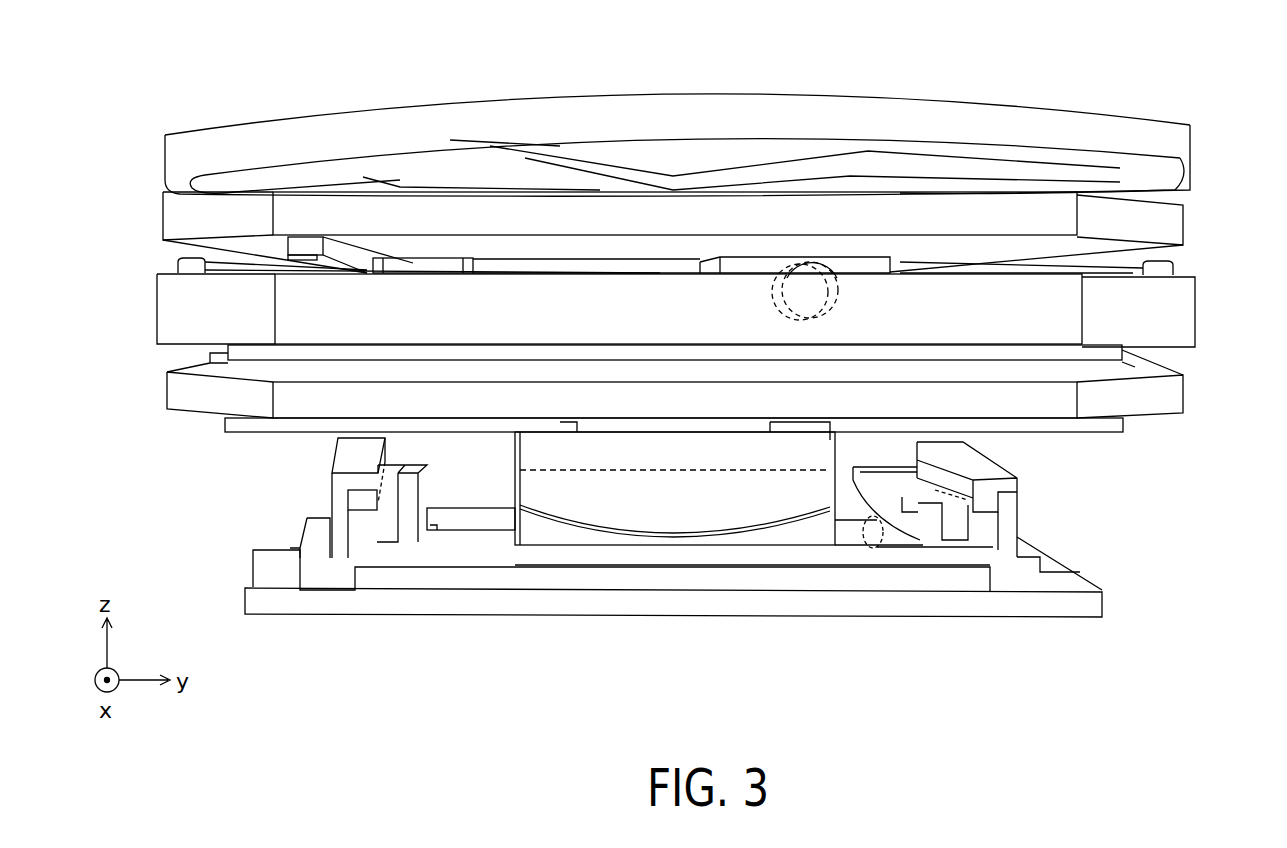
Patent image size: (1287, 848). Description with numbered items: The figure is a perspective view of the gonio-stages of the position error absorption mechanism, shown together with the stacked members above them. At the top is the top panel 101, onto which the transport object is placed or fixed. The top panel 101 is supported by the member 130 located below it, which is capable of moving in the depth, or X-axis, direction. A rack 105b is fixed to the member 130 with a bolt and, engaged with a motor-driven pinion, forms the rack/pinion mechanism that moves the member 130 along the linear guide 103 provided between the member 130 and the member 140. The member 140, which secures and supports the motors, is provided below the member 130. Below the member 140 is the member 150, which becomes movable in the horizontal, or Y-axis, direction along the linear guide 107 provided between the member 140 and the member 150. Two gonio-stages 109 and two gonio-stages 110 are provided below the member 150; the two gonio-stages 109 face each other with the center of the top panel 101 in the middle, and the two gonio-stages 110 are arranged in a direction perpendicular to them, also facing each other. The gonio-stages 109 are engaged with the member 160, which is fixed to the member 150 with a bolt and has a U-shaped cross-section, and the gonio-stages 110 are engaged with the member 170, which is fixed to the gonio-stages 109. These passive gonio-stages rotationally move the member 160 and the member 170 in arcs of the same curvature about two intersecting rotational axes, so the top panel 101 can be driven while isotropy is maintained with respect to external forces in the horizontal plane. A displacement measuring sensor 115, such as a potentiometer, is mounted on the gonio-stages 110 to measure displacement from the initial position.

The top panel 101 is at (680, 105).
The rack 105b is at (306, 248).
The member 130 is at (1178, 222).
The linear guide 103 is at (178, 266).
The member 140 is at (1183, 314).
The linear guide 107 is at (1130, 365).
The member 150 is at (1178, 398).
The member 160 is at (755, 487).
The gonio-stages 109 is at (645, 520).
The displacement measuring sensor 115 is at (868, 540).
The gonio-stages 110 is at (363, 500).
The member 170 is at (405, 540).